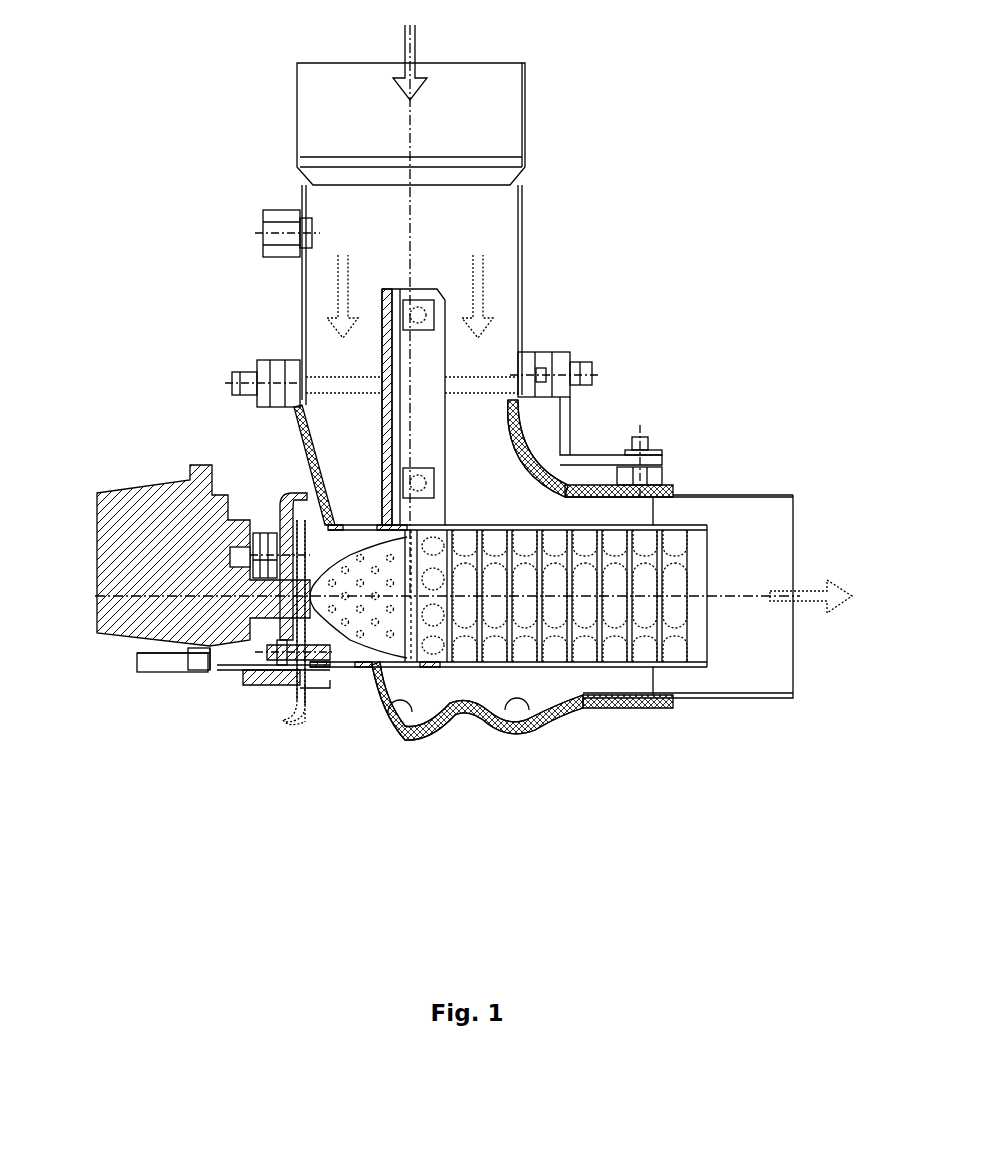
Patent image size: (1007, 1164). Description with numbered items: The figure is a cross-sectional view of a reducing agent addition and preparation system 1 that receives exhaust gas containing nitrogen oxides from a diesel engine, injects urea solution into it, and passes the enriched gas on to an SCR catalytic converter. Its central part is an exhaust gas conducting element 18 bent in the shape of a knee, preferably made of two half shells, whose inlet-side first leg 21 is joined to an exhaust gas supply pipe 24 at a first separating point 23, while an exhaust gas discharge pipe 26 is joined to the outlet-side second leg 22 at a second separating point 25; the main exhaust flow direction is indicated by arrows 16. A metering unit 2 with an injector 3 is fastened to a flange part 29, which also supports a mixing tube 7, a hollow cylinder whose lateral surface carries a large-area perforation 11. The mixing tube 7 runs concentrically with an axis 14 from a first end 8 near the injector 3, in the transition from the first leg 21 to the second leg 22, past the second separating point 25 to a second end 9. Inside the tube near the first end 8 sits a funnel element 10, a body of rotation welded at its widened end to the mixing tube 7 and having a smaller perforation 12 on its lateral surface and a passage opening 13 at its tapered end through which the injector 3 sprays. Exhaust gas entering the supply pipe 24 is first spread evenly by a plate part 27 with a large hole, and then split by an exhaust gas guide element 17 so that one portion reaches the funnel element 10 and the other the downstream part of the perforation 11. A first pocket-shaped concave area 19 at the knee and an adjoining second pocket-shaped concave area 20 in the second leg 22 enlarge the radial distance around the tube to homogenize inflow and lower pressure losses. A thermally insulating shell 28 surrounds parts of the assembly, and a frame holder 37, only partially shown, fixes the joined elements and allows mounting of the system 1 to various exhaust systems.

The reducing agent addition and preparation system 1 is at (700, 243).
The reducing agent metering unit 2 is at (140, 487).
The injector 3 is at (258, 533).
The mixing tube 7 is at (583, 670).
The first mixing tube end 8 is at (310, 712).
The second mixing tube end 9 is at (707, 643).
The funnel element 10 is at (372, 650).
The mixing tube perforation 11 is at (467, 617).
The funnel element perforation 12 is at (357, 545).
The funnel element passage opening 13 is at (283, 630).
The rotational axis 14 is at (736, 590).
The arrow: exhaust gas flow 16 is at (417, 38).
The exhaust gas guide element 17 is at (432, 428).
The exhaust gas conducting element 18 is at (217, 412).
The first pocket-shaped concave area 19 is at (417, 730).
The second pocket-shaped concave area 20 is at (505, 722).
The first leg of exhaust gas conducting element 21 is at (305, 436).
The second leg of exhaust gas conducting element 22 is at (612, 690).
The first separating point 23 is at (528, 360).
The exhaust gas supply pipe 24 is at (300, 296).
The second separating point 25 is at (653, 508).
The exhaust gas discharge pipe 26 is at (770, 492).
The plate part 27 is at (305, 176).
The thermally insulating shell 28 is at (560, 482).
The flange part 29 is at (277, 693).
The frame holder 37 is at (575, 408).